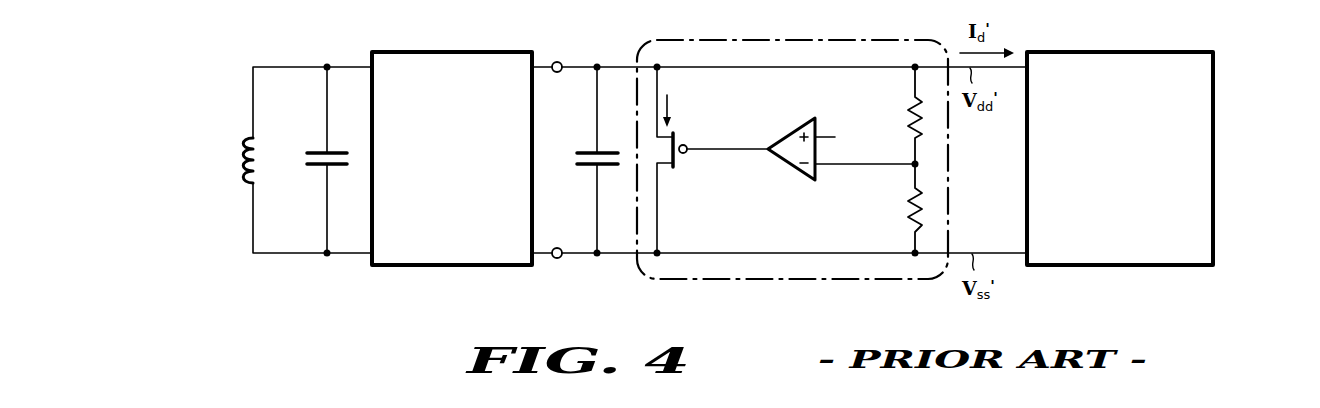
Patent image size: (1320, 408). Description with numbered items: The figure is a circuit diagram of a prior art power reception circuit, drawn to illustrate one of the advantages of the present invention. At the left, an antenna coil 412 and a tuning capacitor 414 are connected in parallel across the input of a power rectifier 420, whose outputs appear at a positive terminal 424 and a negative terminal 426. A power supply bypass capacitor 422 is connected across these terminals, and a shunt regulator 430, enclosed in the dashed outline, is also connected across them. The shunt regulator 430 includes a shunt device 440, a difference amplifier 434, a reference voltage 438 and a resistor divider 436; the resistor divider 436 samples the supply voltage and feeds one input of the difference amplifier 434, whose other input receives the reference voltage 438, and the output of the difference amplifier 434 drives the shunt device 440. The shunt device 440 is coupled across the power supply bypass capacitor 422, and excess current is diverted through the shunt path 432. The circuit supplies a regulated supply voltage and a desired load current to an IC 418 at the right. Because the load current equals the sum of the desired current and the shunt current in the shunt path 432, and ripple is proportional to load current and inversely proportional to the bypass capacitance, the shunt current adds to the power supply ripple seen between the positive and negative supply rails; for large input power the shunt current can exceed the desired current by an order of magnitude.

The inductor / antenna coil 412 is at (257, 171).
The tuning capacitor 414 is at (307, 151).
The IC 418 is at (1120, 52).
The power rectifier 420 is at (453, 52).
The power supply bypass capacitor 422 is at (579, 151).
The positive rectifier output terminal 424 is at (558, 61).
The negative rectifier output terminal 426 is at (557, 259).
The shunt regulator 430 is at (793, 281).
The shunt path 432 is at (671, 100).
The difference amplifier 434 is at (791, 126).
The resistor divider 436 is at (912, 168).
The reference voltage 438 is at (835, 130).
The shunt device 440 is at (677, 167).